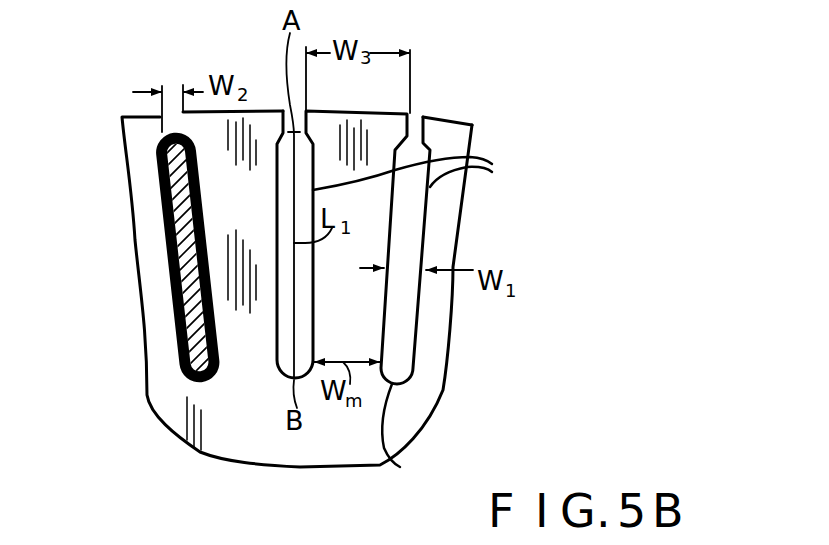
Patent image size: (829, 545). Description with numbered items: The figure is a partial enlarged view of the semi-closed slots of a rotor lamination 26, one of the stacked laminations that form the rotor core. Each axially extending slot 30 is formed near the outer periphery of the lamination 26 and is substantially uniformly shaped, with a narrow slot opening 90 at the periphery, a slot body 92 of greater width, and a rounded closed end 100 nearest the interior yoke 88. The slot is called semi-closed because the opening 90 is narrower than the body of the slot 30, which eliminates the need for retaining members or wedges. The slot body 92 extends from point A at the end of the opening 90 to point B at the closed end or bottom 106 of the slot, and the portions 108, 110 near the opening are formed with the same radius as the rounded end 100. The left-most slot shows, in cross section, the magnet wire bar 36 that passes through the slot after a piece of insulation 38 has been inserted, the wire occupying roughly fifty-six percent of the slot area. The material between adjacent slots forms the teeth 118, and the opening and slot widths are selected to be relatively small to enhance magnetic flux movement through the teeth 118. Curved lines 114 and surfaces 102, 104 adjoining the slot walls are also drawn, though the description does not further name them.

The rotor lamination 26 is at (543, 160).
The semi-closed slot 30 is at (282, 220).
The magnet wire bar 36 is at (180, 212).
The insulation 38 is at (178, 263).
The interior yoke 88 is at (327, 433).
The slot opening 90 is at (418, 127).
The slot body 92 is at (280, 335).
The rounded closed end 100 is at (399, 392).
The web 102 is at (380, 323).
The web 104 is at (417, 315).
The bottom of the slot 106 is at (412, 436).
The slot portion 108 is at (430, 148).
The slot portion 110 is at (403, 141).
The surface line 114 is at (421, 172).
The tooth 118 is at (256, 111).